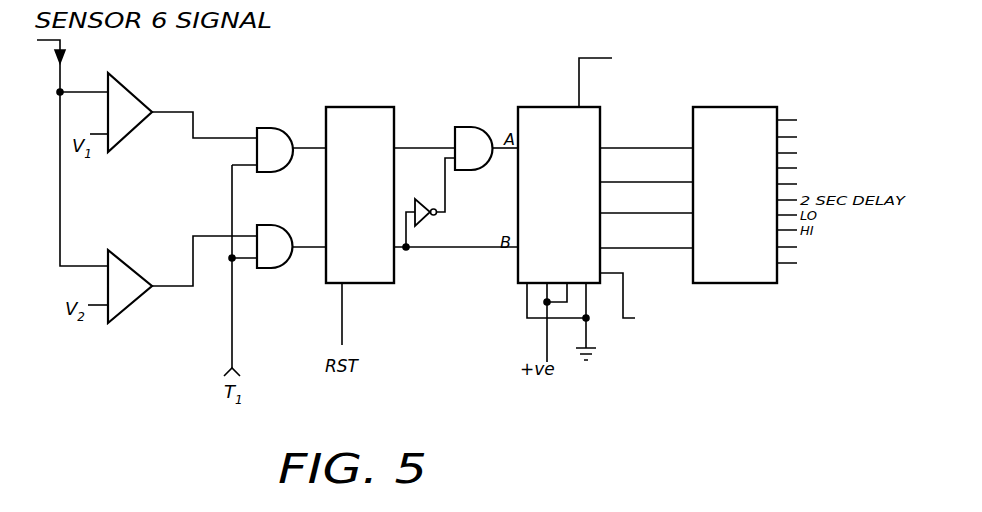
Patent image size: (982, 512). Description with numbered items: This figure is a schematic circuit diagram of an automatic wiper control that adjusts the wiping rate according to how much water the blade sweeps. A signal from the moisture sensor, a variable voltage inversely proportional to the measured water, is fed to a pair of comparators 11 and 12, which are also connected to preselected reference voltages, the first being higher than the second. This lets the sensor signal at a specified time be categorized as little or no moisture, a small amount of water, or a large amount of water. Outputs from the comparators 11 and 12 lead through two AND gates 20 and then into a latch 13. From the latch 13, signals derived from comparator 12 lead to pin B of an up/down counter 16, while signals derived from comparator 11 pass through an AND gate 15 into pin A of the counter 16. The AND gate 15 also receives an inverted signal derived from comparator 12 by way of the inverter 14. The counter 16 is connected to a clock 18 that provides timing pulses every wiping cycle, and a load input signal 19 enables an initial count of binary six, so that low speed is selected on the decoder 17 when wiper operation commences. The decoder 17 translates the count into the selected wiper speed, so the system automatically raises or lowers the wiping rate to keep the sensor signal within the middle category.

The comparator 11 is at (133, 93).
The comparator 12 is at (137, 313).
The latch 13 is at (355, 106).
The inverter 14 is at (427, 223).
The AND gate 15 is at (473, 127).
The up/down counter 16 is at (540, 107).
The decoder 17 is at (717, 107).
The clock 18 is at (615, 78).
The load input signal 19 is at (623, 305).
The AND gates 20 is at (262, 175).